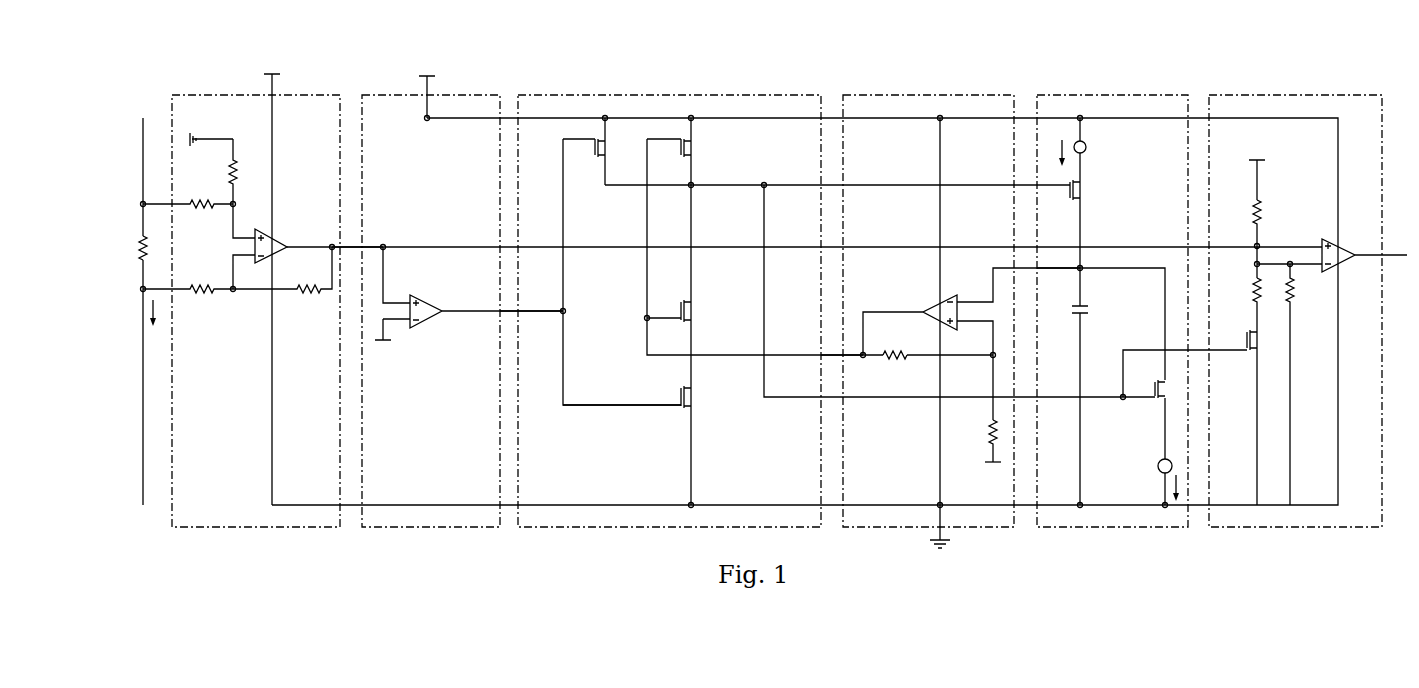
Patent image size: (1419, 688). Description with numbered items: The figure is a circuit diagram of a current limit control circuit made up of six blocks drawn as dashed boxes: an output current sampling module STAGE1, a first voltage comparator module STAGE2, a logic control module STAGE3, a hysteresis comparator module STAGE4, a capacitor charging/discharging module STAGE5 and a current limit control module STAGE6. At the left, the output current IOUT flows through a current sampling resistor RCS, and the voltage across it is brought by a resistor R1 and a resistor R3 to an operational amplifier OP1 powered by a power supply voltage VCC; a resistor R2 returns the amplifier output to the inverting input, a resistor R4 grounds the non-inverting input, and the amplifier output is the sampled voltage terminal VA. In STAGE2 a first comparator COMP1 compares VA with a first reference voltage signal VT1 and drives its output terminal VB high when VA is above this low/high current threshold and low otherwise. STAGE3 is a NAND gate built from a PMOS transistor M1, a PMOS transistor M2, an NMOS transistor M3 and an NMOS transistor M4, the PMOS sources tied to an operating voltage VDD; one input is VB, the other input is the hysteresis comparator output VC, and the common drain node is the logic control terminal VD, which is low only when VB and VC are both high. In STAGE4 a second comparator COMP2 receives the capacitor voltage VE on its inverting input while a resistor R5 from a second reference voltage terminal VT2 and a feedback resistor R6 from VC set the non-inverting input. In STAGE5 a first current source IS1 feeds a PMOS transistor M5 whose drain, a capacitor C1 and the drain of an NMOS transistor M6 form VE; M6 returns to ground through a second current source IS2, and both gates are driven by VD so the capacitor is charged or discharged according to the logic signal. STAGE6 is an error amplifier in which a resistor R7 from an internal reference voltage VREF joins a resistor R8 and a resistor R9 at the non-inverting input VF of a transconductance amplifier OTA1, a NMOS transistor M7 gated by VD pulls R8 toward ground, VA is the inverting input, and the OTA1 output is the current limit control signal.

The output current sampling module STAGE1 is at (256, 302).
The first voltage comparator module STAGE2 is at (422, 302).
The logic control module STAGE3 is at (669, 302).
The hysteresis comparator module STAGE4 is at (928, 302).
The capacitor charging/discharging module STAGE5 is at (1112, 302).
The current limit control module STAGE6 is at (1295, 302).
The current sampling resistor RCS is at (120, 248).
The output current IOUT is at (124, 314).
The power supply voltage VCC is at (271, 279).
The operating voltage VDD is at (428, 86).
The resistor R1 is at (188, 278).
The resistor R2 is at (282, 270).
The resistor R3 is at (188, 194).
The resistor R4 is at (227, 188).
The resistor R5 is at (1005, 441).
The resistor R6 is at (895, 366).
The resistor R7 is at (1269, 238).
The resistor R8 is at (1244, 304).
The resistor R9 is at (1301, 384).
The operational amplifier OP1 is at (276, 256).
The first comparator COMP1 is at (473, 287).
The second comparator COMP2 is at (1011, 344).
The first reference voltage signal VT1 is at (390, 341).
The second reference voltage terminal VT2 is at (989, 476).
The output terminal of the output current sampling module VA is at (359, 235).
The output terminal of the first voltage comparator module VB is at (531, 302).
The output terminal of the hysteresis comparator module VC is at (842, 345).
The output terminal of the logic control module VD is at (837, 174).
The output terminal of the capacitor charging/discharging module VE is at (1058, 283).
The node voltage VF is at (1289, 256).
The internal reference voltage VREF is at (1251, 170).
The PMOS transistor M1 is at (615, 151).
The PMOS transistor M2 is at (684, 311).
The NMOS transistor M3 is at (685, 311).
The NMOS transistor M4 is at (643, 397).
The PMOS transistor M5 is at (1090, 242).
The NMOS transistor M6 is at (1150, 419).
The NMOS transistor M7 is at (1266, 417).
The first current source IS1 is at (1087, 149).
The second current source IS2 is at (1151, 482).
The capacitor C1 is at (1092, 403).
The transconductance amplifier OTA1 is at (1364, 252).